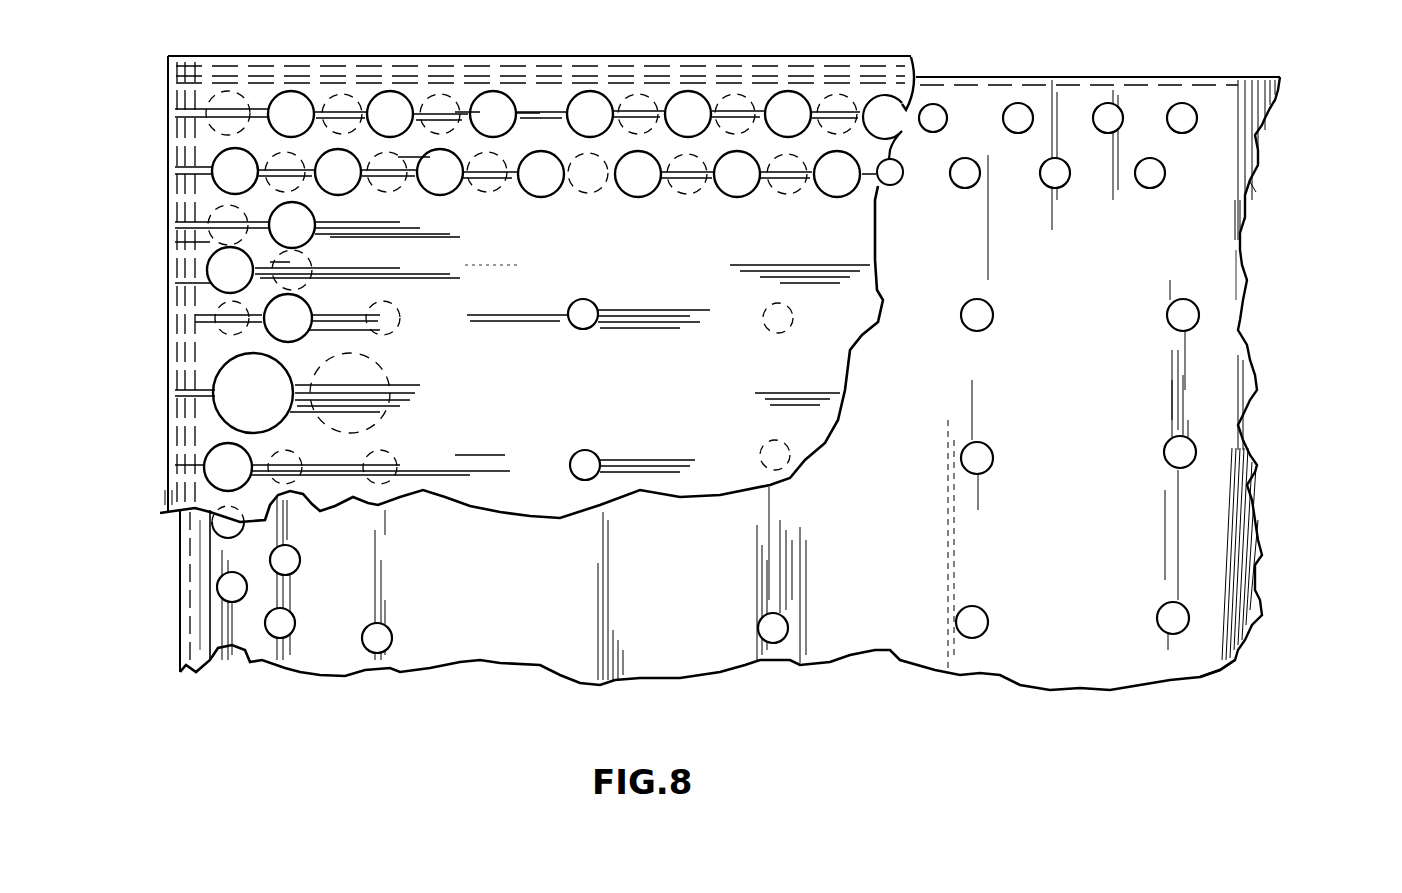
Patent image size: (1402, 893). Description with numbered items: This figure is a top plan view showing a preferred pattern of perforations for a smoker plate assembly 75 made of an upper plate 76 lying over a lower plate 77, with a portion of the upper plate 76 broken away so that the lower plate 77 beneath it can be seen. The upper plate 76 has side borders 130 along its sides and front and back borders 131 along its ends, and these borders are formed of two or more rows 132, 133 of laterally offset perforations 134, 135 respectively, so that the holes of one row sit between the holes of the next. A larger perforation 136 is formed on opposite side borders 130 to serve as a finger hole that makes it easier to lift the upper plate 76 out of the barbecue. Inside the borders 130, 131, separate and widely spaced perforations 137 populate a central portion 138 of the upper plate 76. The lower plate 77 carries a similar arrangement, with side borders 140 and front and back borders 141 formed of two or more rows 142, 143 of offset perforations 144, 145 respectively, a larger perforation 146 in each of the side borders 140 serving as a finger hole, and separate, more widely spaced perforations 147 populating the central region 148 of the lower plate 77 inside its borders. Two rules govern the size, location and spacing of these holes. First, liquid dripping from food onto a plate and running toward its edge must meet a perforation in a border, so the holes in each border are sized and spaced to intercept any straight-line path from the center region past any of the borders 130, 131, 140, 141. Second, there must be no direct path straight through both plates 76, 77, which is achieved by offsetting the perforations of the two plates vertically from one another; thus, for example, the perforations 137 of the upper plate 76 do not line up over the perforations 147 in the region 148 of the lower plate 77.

The smoker plate assembly 75 is at (1310, 222).
The upper plate 76 is at (800, 57).
The lower plate 77 is at (1100, 77).
The side borders 130 is at (205, 283).
The front and back borders 131 is at (527, 113).
The row of perforations 132 is at (468, 112).
The row of perforations 133 is at (413, 155).
The perforations 134 is at (590, 105).
The perforations 135 is at (642, 160).
The larger perforation 136 is at (200, 392).
The perforations 137 is at (590, 312).
The central portion 138 is at (532, 258).
The side borders 140 is at (200, 670).
The front and back borders 141 is at (1270, 130).
The row of perforations 142 is at (1278, 99).
The row of perforations 143 is at (1256, 183).
The perforations 144 is at (1183, 113).
The perforations 145 is at (1153, 178).
The larger perforation 146 is at (382, 405).
The perforations 147 is at (1178, 316).
The lower layer surface 148 is at (1085, 460).